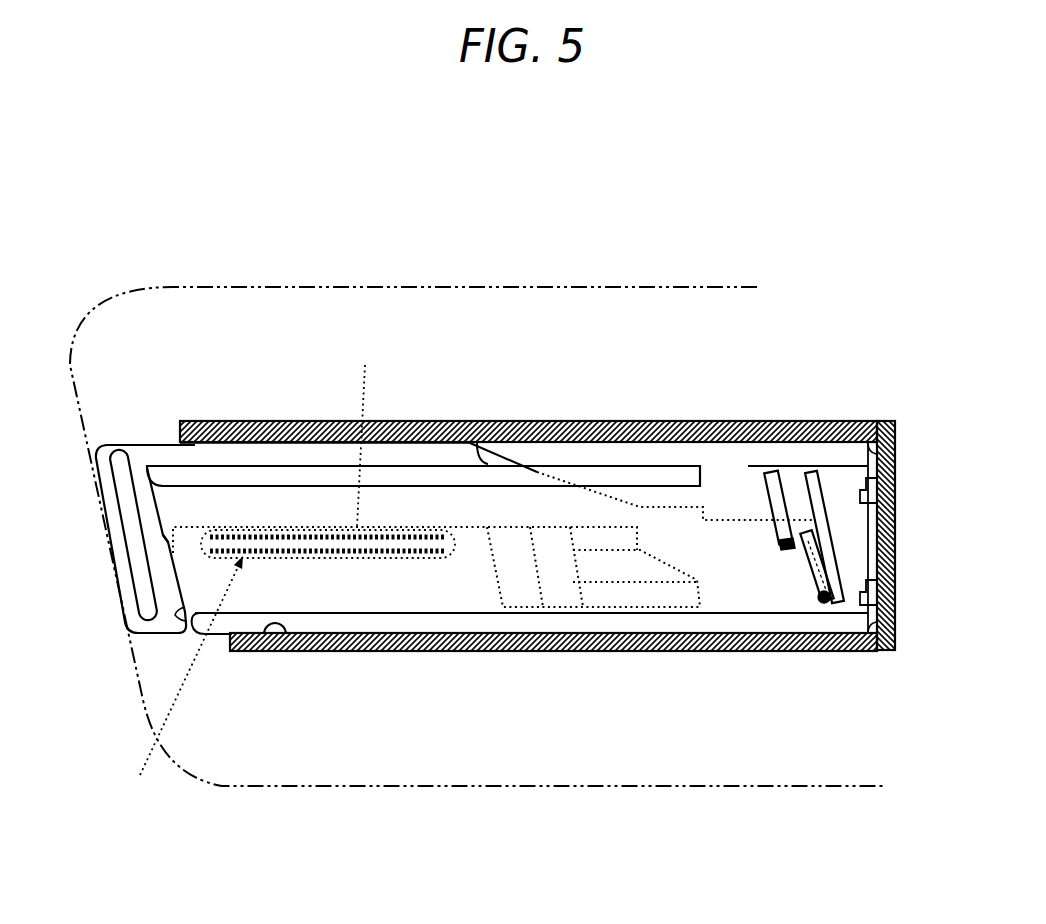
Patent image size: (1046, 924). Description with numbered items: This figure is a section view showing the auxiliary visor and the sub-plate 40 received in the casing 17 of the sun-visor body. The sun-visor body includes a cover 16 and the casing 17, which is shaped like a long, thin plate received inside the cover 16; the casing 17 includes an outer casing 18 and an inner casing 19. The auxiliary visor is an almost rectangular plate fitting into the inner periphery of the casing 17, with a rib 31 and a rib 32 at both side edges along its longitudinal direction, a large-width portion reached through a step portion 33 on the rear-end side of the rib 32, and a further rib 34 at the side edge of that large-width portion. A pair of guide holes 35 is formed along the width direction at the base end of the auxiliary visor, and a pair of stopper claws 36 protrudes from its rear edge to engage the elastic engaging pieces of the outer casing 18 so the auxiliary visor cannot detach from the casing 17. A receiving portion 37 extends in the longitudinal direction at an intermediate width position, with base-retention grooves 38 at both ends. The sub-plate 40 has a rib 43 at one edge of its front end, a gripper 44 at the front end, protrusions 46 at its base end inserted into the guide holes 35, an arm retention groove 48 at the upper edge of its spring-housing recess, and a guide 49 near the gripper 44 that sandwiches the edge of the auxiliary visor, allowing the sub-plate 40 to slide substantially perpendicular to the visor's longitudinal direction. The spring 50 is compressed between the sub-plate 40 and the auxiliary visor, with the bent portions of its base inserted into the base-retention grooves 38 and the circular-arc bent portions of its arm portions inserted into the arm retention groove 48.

The cover 16 is at (600, 286).
The casing 17 is at (512, 419).
The outer casing 18 is at (408, 655).
The inner casing 19 is at (263, 638).
The rib 31 is at (577, 625).
The rib 32 is at (427, 473).
The step portion 33 is at (690, 456).
The rib 34 is at (818, 452).
The guide holes 35 is at (762, 486).
The stopper claws 36 is at (877, 489).
The receiving portion 37 is at (373, 557).
The base-retention grooves 38 is at (420, 557).
The sub-plate 40 is at (156, 436).
The rib 43 is at (248, 451).
The gripper 44 is at (138, 574).
The protrusions 46 is at (784, 543).
The arm retention groove 48 is at (364, 431).
The guide 49 is at (192, 572).
The spring 50 is at (180, 681).